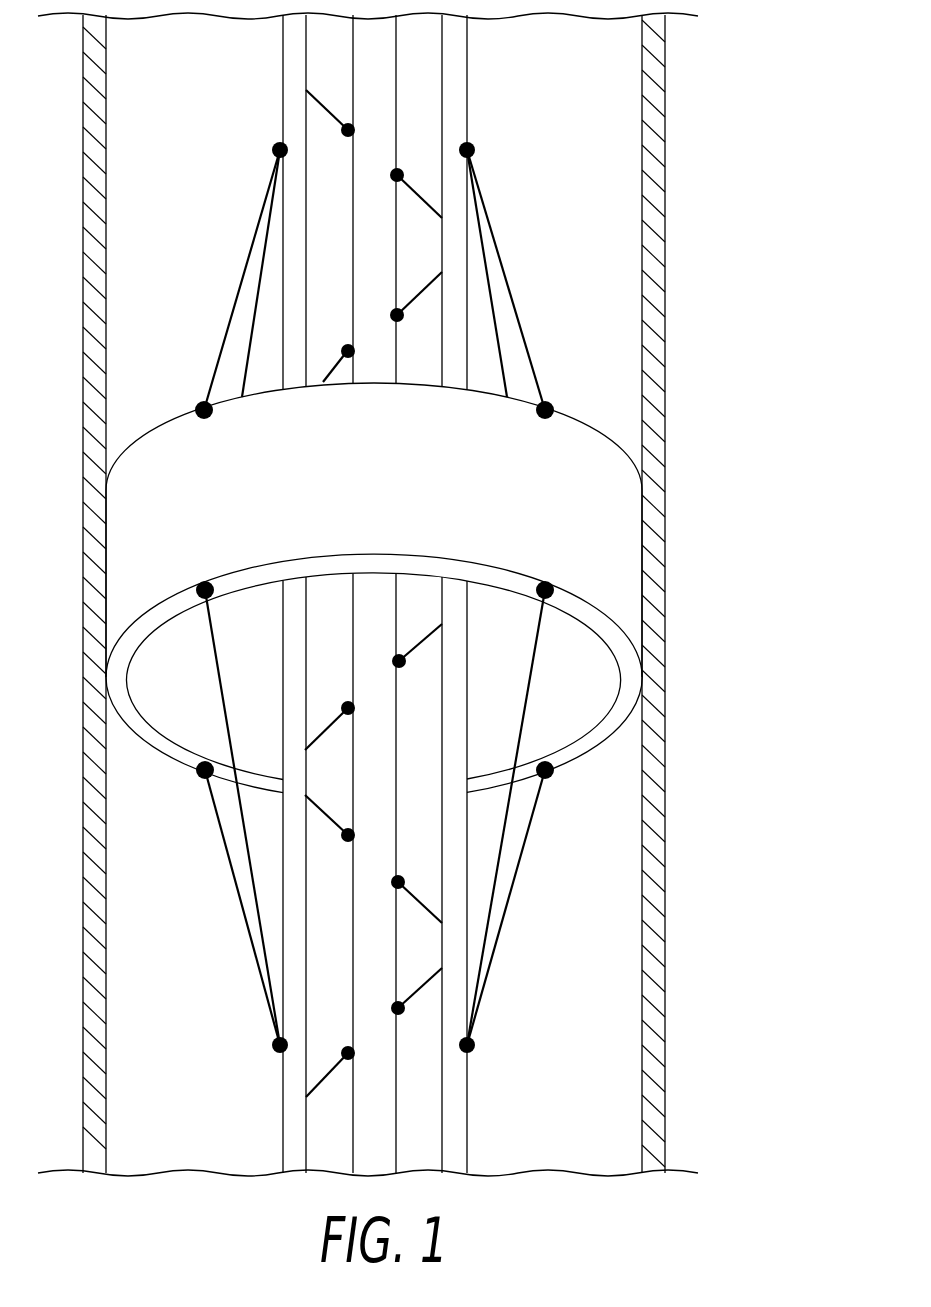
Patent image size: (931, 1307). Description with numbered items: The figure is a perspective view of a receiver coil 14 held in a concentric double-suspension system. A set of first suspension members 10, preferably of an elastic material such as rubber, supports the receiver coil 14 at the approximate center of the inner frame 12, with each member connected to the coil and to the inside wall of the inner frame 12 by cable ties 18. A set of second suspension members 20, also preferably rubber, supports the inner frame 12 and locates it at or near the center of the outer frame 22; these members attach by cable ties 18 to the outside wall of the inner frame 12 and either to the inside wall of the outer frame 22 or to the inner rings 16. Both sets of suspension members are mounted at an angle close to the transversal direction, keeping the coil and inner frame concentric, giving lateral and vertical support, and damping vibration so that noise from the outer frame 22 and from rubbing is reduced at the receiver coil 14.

The first suspension members 10 is at (408, 193).
The inner frame 12 is at (466, 322).
The receiver coil 14 is at (397, 256).
The inner rings 16 is at (620, 555).
The cable ties 18 is at (553, 760).
The second suspension members 20 is at (527, 852).
The outer frame 22 is at (665, 1029).